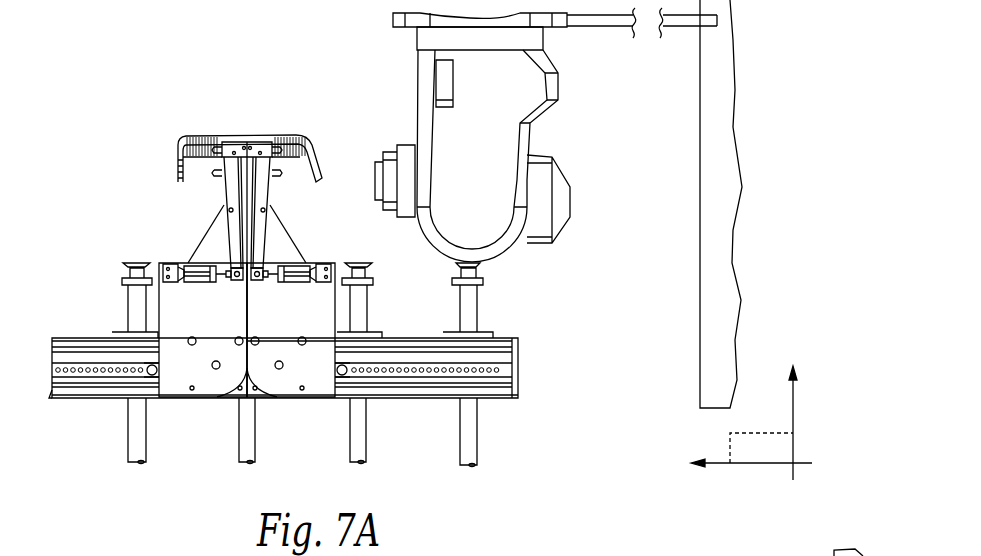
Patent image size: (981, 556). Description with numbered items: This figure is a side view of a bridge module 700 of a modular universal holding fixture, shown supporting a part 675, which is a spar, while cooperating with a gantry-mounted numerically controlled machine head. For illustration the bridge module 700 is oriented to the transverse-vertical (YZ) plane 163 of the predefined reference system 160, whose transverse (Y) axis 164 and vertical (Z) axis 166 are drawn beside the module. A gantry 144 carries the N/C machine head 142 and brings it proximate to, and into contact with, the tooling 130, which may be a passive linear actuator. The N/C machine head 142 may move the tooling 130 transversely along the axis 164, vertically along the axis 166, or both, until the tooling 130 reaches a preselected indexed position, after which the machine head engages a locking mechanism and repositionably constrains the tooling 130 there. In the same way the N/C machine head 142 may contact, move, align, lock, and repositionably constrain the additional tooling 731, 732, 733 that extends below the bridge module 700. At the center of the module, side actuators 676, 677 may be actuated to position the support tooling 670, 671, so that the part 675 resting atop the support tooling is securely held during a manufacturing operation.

The tooling 130 is at (463, 313).
The N/C machine head 142 is at (496, 248).
The gantry 144 is at (700, 325).
The predefined reference system 160 is at (791, 407).
The transverse-vertical (YZ) plane 163 is at (780, 447).
The transverse (Y) axis 164 is at (747, 463).
The vertical (Z) axis 166 is at (793, 410).
The support tooling 670 is at (208, 243).
The support tooling 671 is at (282, 238).
The part 675 is at (318, 162).
The side actuator 676 is at (193, 279).
The side actuator 677 is at (297, 280).
The bridge module 700 is at (520, 372).
The tooling 731 is at (350, 440).
The tooling 732 is at (238, 440).
The tooling 733 is at (128, 440).